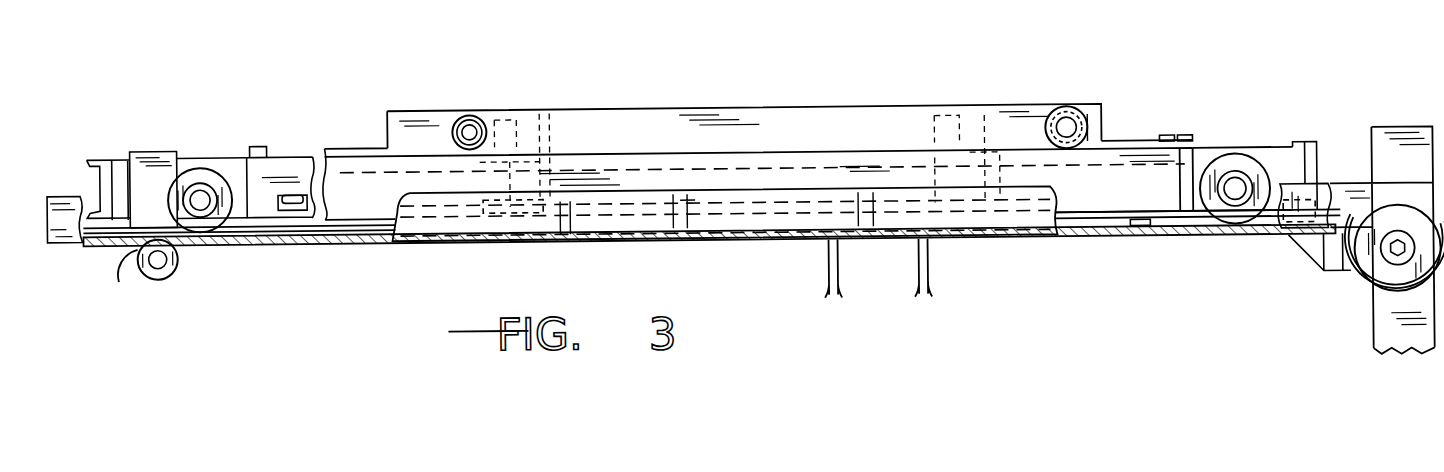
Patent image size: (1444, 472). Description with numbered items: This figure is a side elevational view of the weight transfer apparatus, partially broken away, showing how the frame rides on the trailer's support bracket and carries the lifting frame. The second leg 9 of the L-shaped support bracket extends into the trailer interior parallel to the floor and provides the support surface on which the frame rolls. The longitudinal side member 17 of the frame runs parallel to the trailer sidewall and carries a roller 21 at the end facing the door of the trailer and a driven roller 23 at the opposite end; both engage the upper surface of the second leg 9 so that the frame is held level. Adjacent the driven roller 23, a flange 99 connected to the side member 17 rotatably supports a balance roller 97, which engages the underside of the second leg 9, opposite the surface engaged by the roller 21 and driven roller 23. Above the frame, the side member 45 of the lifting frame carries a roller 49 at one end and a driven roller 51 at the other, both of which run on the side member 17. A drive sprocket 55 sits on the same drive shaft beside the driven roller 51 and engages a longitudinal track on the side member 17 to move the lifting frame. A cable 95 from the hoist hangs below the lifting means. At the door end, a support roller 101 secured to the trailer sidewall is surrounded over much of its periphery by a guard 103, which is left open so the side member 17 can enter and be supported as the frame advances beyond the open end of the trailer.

The second leg 9 is at (1130, 241).
The longitudinal side member 17 is at (287, 165).
The roller 21 is at (1225, 158).
The driven roller 23 is at (200, 163).
The side member 45 is at (627, 122).
The roller 49 is at (470, 113).
The driven roller 51 is at (1043, 124).
The drive sprocket 55 is at (1092, 131).
The cable 95 is at (930, 266).
The balance roller 97 is at (163, 272).
The flange 99 is at (128, 244).
The support roller 101 is at (1388, 213).
The guard 103 is at (1350, 284).